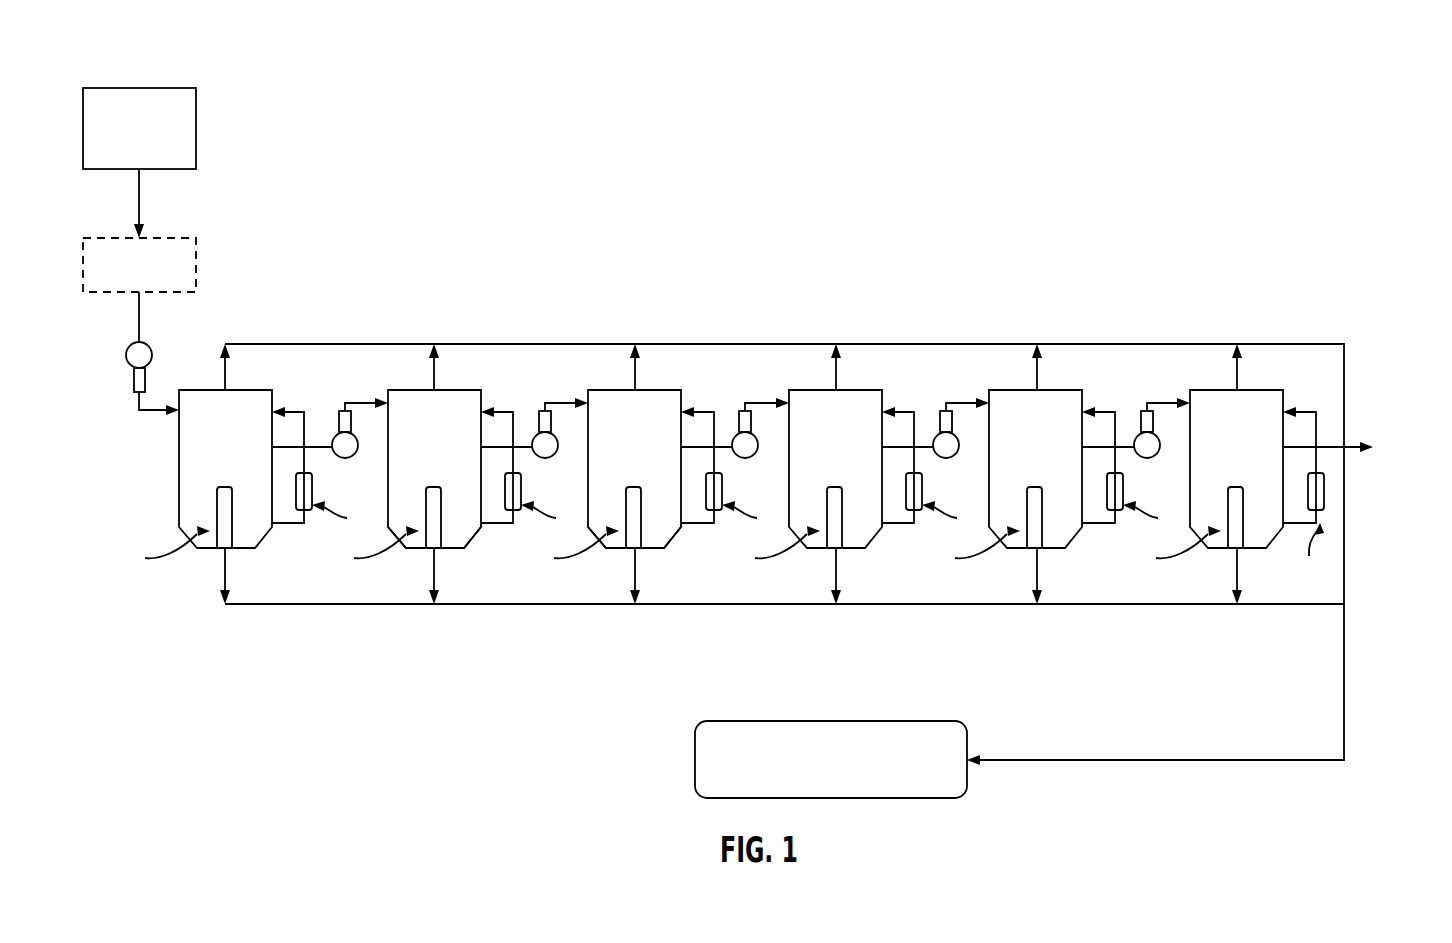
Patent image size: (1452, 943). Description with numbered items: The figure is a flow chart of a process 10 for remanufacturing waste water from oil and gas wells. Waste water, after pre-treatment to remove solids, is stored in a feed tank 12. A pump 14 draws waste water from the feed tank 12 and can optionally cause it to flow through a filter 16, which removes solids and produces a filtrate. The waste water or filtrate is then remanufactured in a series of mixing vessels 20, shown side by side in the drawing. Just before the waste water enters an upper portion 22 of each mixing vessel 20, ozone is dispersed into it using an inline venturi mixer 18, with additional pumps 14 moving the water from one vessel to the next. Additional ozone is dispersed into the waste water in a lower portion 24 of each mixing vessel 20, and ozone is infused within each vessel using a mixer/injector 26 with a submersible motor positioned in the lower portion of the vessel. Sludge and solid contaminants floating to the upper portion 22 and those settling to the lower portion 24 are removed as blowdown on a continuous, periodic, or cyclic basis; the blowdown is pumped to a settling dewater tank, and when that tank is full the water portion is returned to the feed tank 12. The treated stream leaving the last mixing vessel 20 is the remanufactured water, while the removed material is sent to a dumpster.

The process 10 is at (141, 38).
The feed tank 12 is at (196, 128).
The pump 14 is at (152, 352).
The filter 16 is at (196, 264).
The inline venturi mixer 18 is at (312, 493).
The mixing vessel 20 is at (179, 461).
The upper portion 22 is at (410, 390).
The lower portion 24 is at (468, 540).
The mixer/injector 26 is at (233, 530).